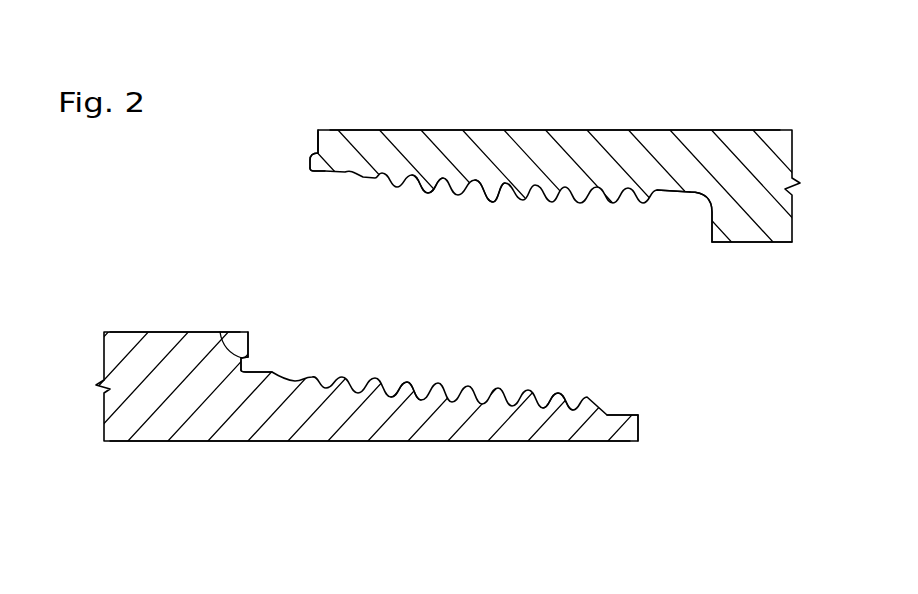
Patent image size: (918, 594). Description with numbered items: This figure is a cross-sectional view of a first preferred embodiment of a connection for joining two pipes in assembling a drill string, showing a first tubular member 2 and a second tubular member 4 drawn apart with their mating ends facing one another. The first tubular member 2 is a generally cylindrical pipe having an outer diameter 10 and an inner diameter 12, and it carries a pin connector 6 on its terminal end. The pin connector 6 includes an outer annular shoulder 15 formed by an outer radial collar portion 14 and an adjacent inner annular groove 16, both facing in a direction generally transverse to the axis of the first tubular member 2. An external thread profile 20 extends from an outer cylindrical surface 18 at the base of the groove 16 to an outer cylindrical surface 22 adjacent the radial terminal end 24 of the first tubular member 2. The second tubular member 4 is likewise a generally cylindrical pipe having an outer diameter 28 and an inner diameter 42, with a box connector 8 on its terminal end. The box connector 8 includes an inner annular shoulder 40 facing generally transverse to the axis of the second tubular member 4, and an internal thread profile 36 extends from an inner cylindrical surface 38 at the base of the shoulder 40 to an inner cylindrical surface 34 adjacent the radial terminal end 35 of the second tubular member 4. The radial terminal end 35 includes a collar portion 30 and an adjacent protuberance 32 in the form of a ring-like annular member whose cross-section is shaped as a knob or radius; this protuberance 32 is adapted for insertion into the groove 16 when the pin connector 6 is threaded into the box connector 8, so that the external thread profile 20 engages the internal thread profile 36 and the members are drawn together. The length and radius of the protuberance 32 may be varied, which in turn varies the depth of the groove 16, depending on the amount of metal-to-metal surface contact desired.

The first tubular member 2 is at (193, 430).
The second tubular member 4 is at (700, 150).
The pin connector 6 is at (558, 360).
The box connector 8 is at (425, 210).
The outer diameter 10 is at (170, 331).
The inner diameter 12 is at (348, 442).
The outer radial collar portion 14 is at (255, 340).
The outer annular shoulder 15 is at (255, 350).
The inner annular groove 16 is at (222, 331).
The outer cylindrical surface 18 is at (265, 372).
The external thread profile 20 is at (408, 381).
The outer cylindrical surface 22 is at (634, 415).
The radial terminal end 24 is at (639, 432).
The outer diameter 28 is at (452, 130).
The collar portion 30 is at (318, 131).
The protuberance 32 is at (308, 159).
The inner cylindrical surface 34 is at (318, 172).
The radial terminal end 35 is at (317, 142).
The internal thread profile 36 is at (490, 199).
The inner cylindrical surface 38 is at (670, 193).
The inner annular shoulder 40 is at (710, 210).
The inner diameter 42 is at (755, 243).